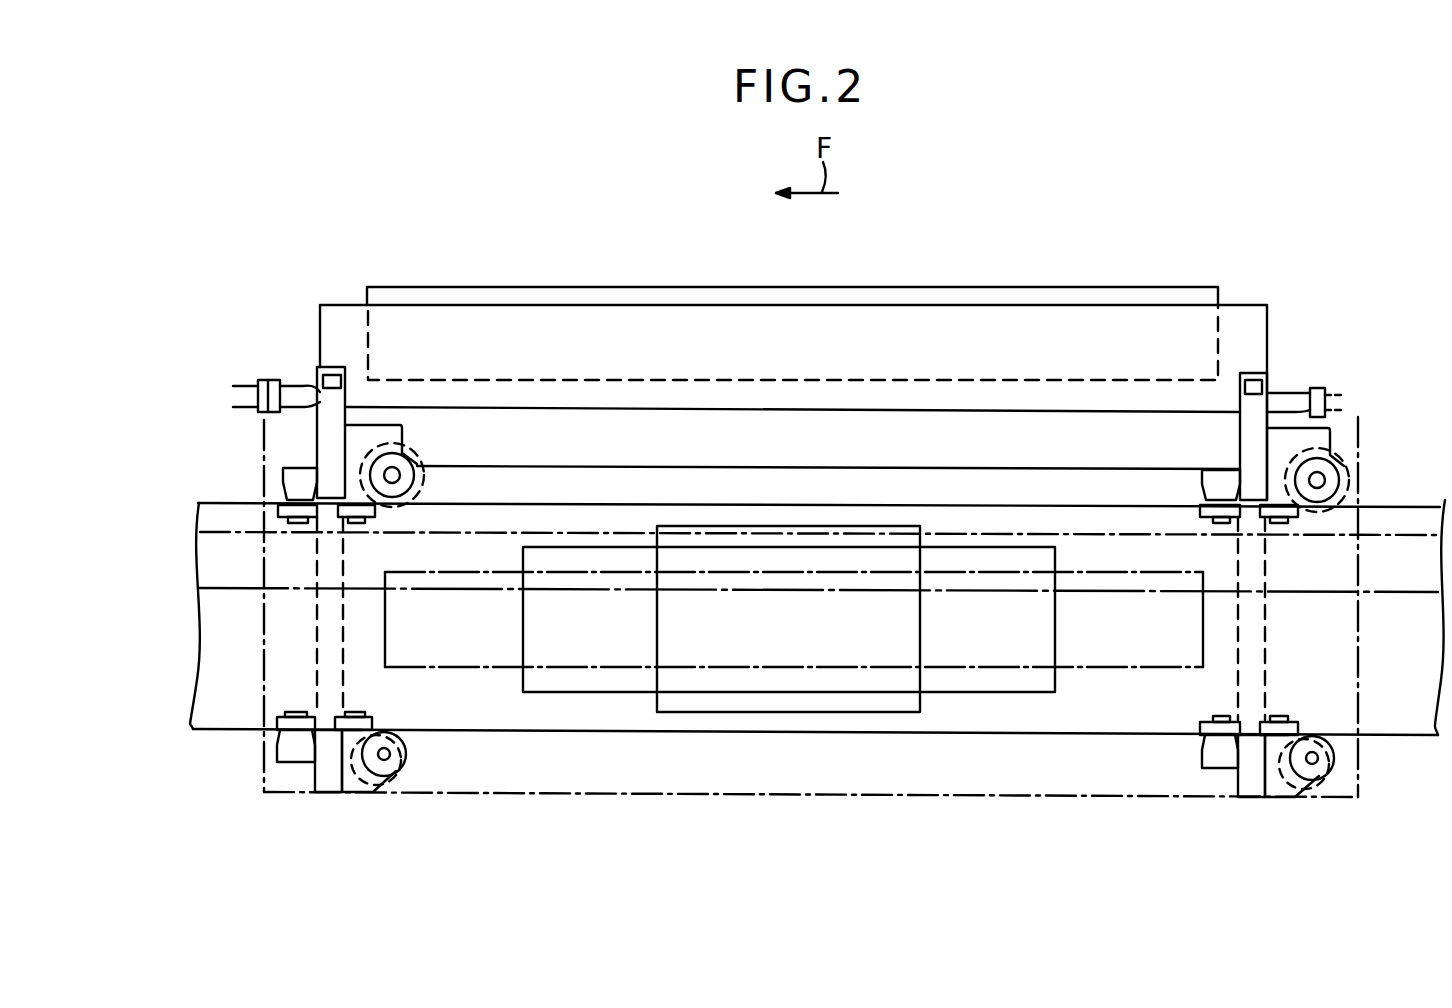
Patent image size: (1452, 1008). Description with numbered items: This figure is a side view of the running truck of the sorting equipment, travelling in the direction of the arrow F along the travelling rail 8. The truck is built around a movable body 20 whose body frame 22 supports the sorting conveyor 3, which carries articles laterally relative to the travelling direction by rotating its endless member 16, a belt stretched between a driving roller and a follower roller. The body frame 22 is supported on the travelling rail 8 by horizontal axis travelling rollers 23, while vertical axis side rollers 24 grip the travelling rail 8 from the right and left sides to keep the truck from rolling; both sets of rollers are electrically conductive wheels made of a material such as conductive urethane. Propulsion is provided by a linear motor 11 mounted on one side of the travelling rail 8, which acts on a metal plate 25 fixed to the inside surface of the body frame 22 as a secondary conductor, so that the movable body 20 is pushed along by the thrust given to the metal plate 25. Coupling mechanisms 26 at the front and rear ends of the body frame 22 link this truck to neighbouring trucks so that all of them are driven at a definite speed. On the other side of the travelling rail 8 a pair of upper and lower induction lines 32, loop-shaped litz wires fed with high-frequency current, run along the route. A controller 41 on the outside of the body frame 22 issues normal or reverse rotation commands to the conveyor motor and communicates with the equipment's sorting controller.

The sorting conveyor 3 is at (1252, 310).
The travelling rail 8 is at (212, 742).
The linear motor 11 is at (537, 683).
The endless member 16 is at (1195, 286).
The movable body 20 is at (768, 608).
The body frame 22 is at (510, 798).
The horizontal axis travelling rollers 23 is at (418, 472).
The vertical axis side rollers 24 is at (378, 512).
The metal plate 25 is at (425, 650).
The coupling mechanisms 26 is at (305, 395).
The induction lines 32 is at (223, 584).
The controller 41 is at (657, 710).